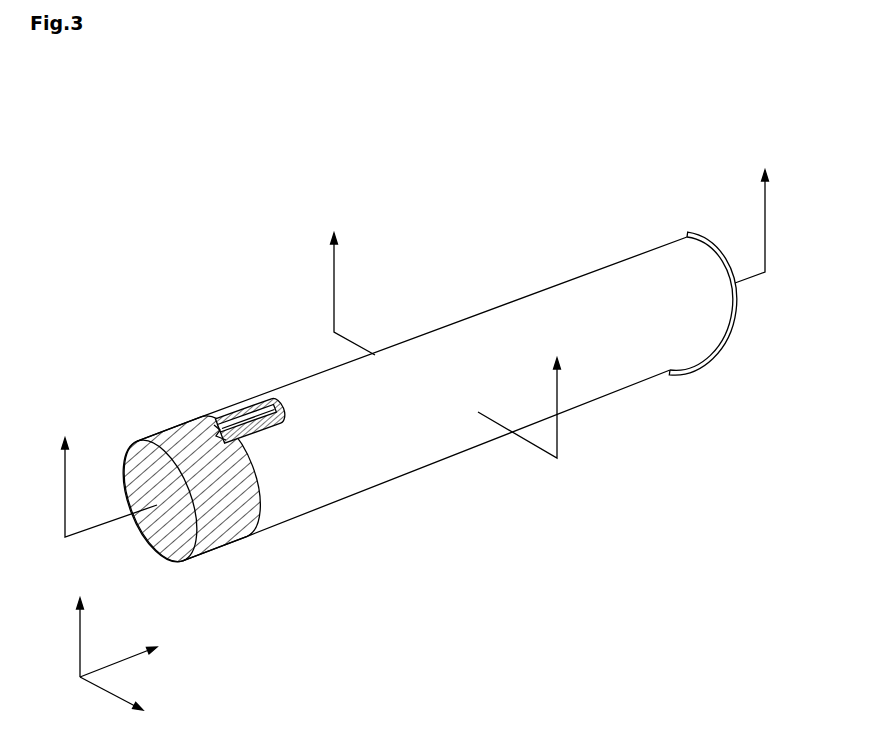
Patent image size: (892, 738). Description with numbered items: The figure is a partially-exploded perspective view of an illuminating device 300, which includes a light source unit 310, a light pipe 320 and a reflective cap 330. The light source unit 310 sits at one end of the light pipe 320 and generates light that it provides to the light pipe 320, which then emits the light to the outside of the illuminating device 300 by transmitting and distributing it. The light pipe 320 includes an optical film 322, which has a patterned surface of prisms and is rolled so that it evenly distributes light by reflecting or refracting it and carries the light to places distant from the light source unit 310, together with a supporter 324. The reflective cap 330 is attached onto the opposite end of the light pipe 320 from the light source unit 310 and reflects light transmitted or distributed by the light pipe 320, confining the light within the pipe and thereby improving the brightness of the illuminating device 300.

The illuminating device 300 is at (720, 110).
The light source unit 310 is at (230, 517).
The light pipe 320 is at (313, 487).
The optical film 322 is at (235, 421).
The supporter 324 is at (268, 398).
The reflective cap 330 is at (738, 313).